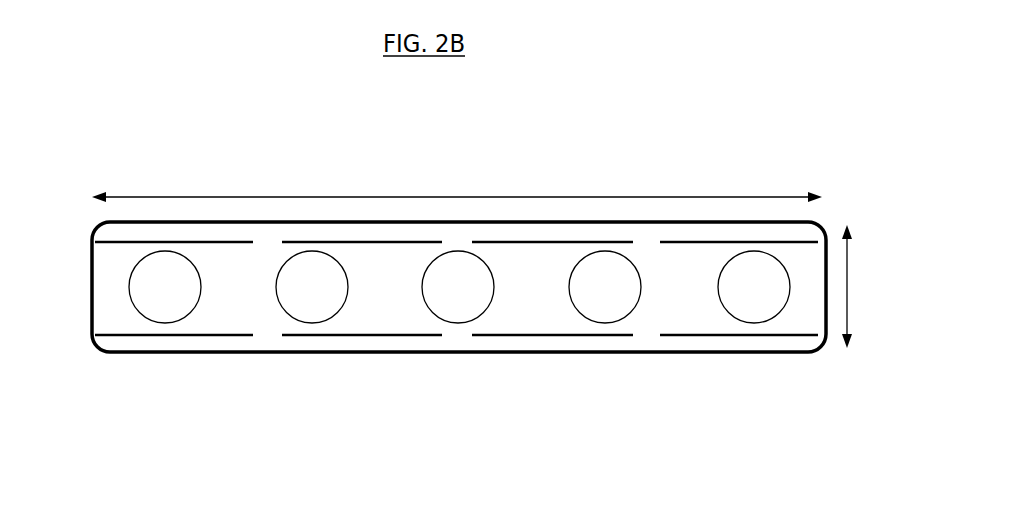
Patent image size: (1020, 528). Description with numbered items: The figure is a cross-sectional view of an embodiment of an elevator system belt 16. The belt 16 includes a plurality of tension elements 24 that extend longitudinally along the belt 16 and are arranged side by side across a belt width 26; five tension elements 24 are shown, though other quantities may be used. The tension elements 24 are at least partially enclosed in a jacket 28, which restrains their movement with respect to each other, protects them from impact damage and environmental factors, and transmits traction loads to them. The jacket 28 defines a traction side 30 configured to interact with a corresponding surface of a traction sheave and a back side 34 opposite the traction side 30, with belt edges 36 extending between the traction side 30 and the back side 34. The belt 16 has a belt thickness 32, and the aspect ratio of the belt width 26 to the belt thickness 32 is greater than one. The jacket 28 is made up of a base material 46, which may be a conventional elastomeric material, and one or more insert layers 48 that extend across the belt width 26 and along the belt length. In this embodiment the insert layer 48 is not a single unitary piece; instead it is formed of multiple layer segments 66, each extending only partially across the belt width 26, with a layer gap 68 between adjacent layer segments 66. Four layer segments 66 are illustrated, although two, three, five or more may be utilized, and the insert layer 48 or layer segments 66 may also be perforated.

The belt 16 is at (146, 131).
The tension elements 24 is at (177, 298).
The belt width 26 is at (288, 197).
The jacket 28 is at (102, 307).
The traction side 30 is at (192, 353).
The belt thickness 32 is at (848, 285).
The back side 34 is at (795, 223).
The belt edges 36 is at (90, 265).
The base material 46 is at (253, 315).
The insert layers 48 is at (576, 384).
The layer segments 66 is at (456, 335).
The layer gap 68 is at (640, 333).